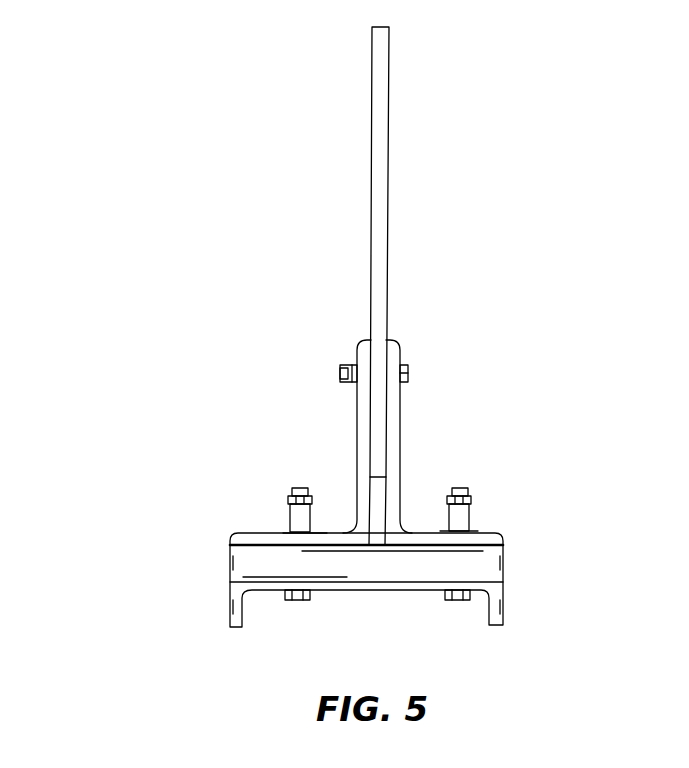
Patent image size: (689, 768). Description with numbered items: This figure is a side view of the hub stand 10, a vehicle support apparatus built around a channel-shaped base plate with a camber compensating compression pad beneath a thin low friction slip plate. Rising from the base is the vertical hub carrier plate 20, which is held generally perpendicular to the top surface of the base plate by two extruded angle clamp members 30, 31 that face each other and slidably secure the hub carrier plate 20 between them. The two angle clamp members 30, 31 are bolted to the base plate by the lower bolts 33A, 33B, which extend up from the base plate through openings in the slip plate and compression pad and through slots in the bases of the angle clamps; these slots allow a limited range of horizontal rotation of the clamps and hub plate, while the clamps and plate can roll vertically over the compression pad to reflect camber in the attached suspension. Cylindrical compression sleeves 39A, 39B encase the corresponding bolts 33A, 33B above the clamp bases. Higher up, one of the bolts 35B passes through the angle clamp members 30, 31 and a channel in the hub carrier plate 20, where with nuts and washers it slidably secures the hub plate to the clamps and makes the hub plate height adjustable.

The hub stand 10 is at (128, 135).
The hub carrier plate 20 is at (378, 134).
The angle clamp member 30 is at (360, 417).
The angle clamp member 31 is at (397, 412).
The bolt 35B is at (408, 372).
The compression sleeve 39A is at (297, 516).
The compression sleeve 39B is at (463, 517).
The bolt 33A is at (293, 602).
The bolt 33B is at (453, 600).